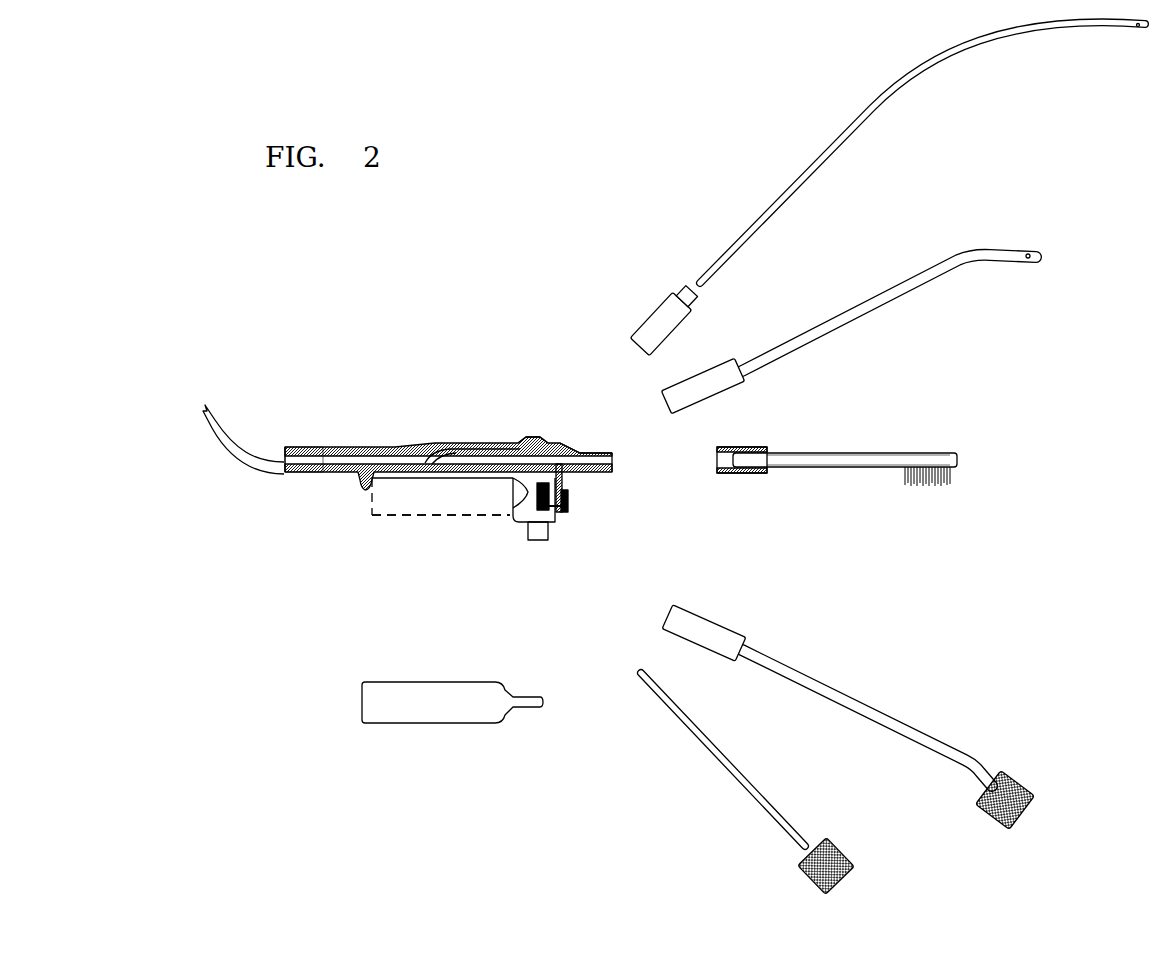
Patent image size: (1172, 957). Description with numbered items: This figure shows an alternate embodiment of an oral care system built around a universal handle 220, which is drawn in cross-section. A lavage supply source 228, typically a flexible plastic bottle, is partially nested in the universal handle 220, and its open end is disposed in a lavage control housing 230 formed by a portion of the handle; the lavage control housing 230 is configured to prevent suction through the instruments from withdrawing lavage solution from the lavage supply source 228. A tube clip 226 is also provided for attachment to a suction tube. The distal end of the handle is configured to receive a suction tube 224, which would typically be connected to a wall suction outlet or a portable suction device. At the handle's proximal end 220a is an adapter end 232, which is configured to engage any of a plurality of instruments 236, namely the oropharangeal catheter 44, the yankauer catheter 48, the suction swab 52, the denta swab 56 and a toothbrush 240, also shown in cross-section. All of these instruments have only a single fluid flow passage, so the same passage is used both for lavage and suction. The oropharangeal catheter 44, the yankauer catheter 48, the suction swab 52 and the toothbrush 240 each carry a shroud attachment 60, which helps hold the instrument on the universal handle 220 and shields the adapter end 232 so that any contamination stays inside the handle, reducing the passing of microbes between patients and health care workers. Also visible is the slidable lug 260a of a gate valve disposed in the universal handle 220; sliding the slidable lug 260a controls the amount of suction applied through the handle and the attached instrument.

The plurality of instruments 236 is at (722, 155).
The oropharangeal catheter 44 is at (875, 110).
The yankauer catheter 48 is at (932, 285).
The suction swab 52 is at (895, 722).
The denta swab 56 is at (752, 782).
The shroud attachment 60 is at (658, 318).
The toothbrush 240 is at (865, 448).
The universal handle 220 is at (310, 448).
The proximal end 220a is at (612, 452).
The suction tube 224 is at (255, 438).
The tube clip 226 is at (535, 543).
The lavage supply source 228 is at (410, 512).
The lavage control housing 230 is at (560, 514).
The adapter end 232 is at (575, 451).
The slidable lug 260a is at (530, 440).